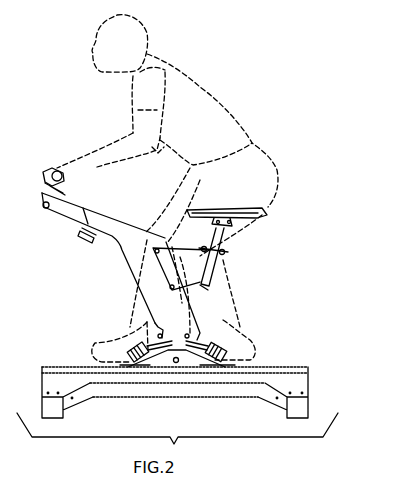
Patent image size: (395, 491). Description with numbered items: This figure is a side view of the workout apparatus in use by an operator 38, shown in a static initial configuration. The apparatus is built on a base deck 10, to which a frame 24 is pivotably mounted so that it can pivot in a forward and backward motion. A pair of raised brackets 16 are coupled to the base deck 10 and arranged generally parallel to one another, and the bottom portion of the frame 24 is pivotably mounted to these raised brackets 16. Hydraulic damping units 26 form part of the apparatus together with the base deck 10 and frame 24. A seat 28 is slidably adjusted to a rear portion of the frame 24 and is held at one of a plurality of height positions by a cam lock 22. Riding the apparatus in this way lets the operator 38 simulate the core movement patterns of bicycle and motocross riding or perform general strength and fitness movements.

The base deck 10 is at (279, 355).
The raised brackets 16 is at (191, 359).
The cam lock 22 is at (226, 262).
The frame 24 is at (121, 251).
The hydraulic damping units 26 is at (113, 354).
The seat 28 is at (244, 208).
The operator 38 is at (265, 97).